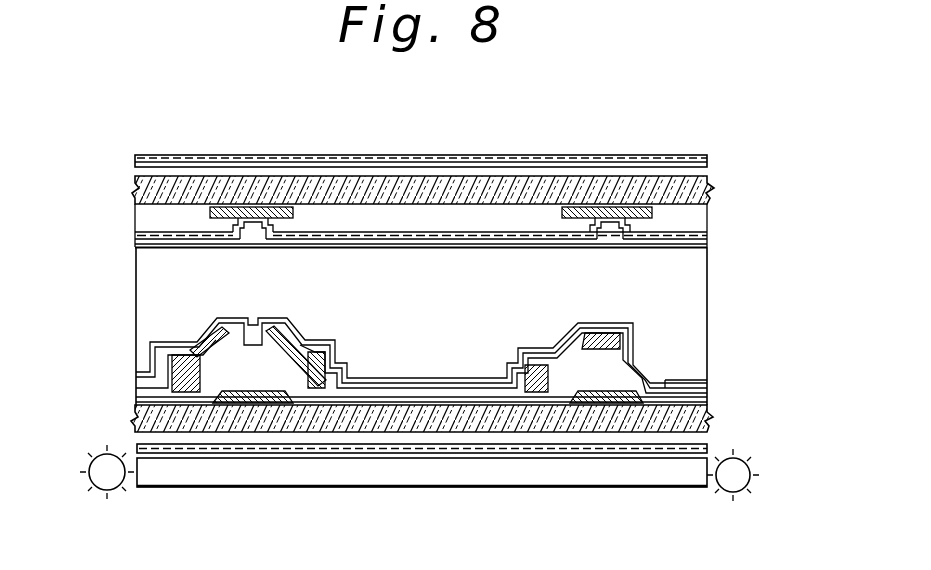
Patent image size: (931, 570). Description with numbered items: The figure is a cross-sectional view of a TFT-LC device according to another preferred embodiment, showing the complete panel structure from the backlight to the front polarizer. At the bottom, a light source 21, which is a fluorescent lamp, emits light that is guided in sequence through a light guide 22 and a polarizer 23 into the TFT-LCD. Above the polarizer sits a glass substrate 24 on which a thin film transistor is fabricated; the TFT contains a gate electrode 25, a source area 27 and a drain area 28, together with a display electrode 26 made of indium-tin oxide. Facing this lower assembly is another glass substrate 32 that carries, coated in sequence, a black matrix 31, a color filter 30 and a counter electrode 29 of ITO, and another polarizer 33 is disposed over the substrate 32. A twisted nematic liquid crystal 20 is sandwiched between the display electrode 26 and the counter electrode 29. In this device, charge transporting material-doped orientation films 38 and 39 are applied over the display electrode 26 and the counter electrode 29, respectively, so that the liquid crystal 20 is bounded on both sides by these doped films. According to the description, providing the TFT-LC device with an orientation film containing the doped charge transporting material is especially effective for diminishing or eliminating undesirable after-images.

The twisted nematic liquid crystal 20 is at (698, 327).
The light source 21 is at (112, 478).
The light guide 22 is at (220, 476).
The polarizer 23 is at (300, 449).
The glass substrate 24 is at (712, 419).
The gate electrode 25 is at (192, 365).
The display electrode 26 is at (408, 378).
The source area 27 is at (215, 328).
The drain area 28 is at (295, 332).
The counter electrode 29 is at (690, 238).
The color filter 30 is at (700, 217).
The black matrix 31 is at (630, 222).
The glass substrate 32 is at (703, 188).
The polarizer 33 is at (688, 156).
The orientation film 38 is at (683, 383).
The orientation film 39 is at (668, 245).